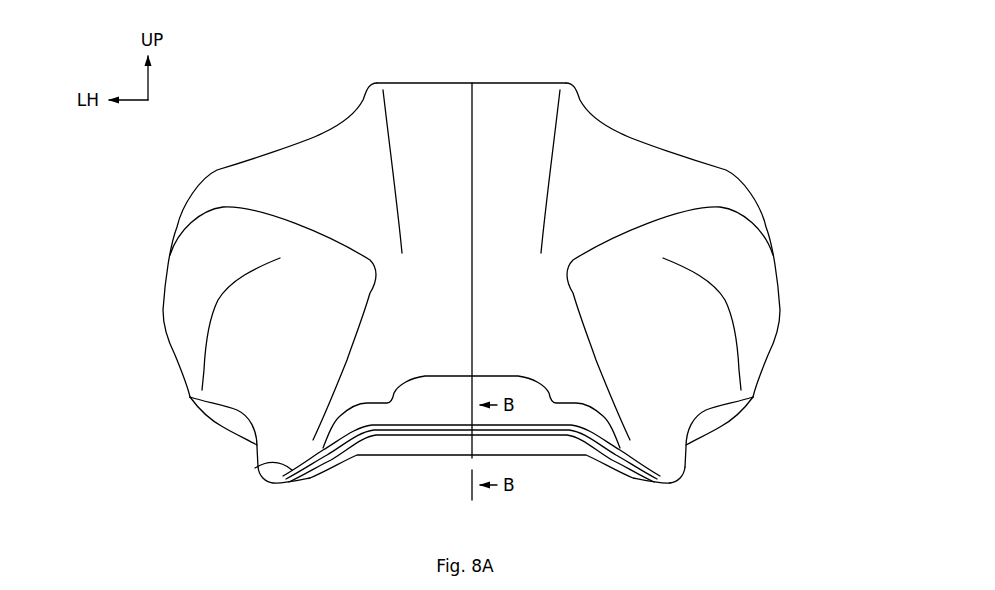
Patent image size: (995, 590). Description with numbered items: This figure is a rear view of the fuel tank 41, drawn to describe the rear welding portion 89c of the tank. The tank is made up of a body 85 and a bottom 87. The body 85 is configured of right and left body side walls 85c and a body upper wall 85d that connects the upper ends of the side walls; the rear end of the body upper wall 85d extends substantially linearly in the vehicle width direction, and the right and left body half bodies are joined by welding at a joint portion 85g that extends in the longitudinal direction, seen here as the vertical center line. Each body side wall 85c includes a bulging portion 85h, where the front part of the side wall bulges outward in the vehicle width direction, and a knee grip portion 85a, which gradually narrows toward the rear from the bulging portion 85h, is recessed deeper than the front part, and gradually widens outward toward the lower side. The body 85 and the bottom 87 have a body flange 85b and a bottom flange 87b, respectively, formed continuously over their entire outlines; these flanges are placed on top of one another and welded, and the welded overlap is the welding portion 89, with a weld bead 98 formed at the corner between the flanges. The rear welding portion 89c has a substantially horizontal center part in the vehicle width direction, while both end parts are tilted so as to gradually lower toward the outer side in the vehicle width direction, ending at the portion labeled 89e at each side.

The fuel tank 41 is at (272, 126).
The body 85 is at (641, 131).
The knee grip portion 85a is at (273, 413).
The body flange 85b is at (255, 468).
The body side wall 85c is at (164, 254).
The body upper wall 85d is at (501, 81).
The joint portion 85g is at (470, 113).
The bulging portion 85h is at (180, 312).
The bottom 87 is at (569, 460).
The bottom flange 87b is at (290, 487).
The welding portion 89 is at (391, 440).
The rear welding portion 89c is at (440, 440).
The tear line end portion 89e is at (652, 489).
The weld bead 98 is at (533, 433).